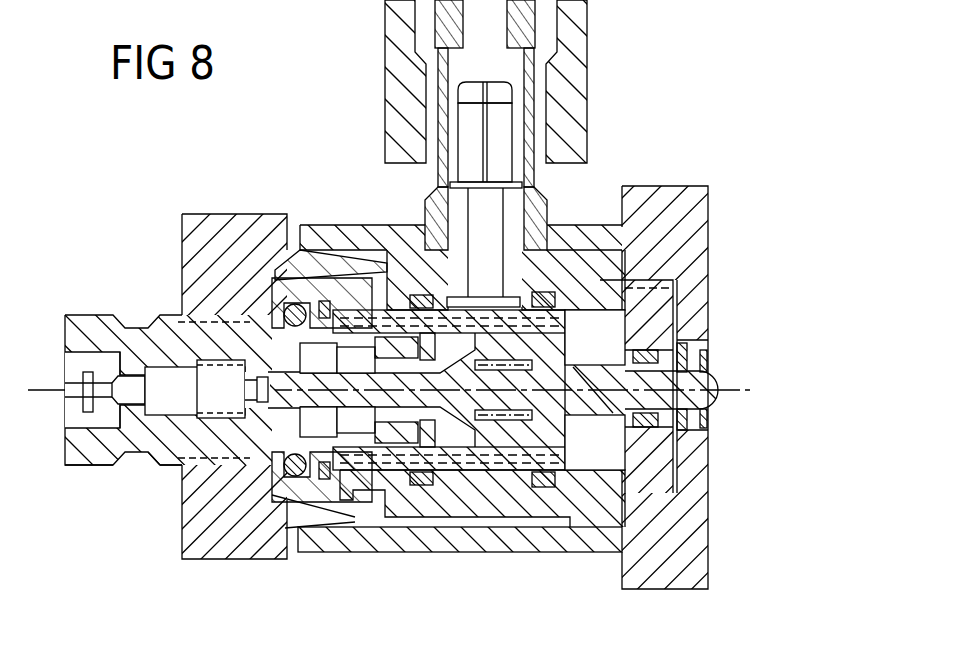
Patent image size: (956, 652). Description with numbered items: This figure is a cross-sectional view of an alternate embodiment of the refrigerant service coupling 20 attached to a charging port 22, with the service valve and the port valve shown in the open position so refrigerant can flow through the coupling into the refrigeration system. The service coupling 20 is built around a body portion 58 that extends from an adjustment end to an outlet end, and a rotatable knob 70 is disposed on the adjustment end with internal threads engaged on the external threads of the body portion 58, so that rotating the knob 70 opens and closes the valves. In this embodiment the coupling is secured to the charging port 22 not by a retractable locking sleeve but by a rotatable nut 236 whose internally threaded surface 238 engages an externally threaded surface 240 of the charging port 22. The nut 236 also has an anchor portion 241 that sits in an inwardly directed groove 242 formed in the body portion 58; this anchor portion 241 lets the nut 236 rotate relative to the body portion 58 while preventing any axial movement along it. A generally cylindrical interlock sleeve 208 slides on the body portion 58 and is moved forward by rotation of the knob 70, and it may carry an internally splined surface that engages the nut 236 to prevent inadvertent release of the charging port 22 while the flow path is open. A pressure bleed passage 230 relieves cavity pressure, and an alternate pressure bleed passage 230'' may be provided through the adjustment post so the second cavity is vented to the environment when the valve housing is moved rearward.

The service coupling 20 is at (654, 152).
The charging port 22 is at (74, 305).
The body portion 58 is at (490, 530).
The rotatable knob 70 is at (716, 296).
The interlock sleeve 208 is at (320, 218).
The pressure bleed passage 230 is at (478, 326).
The pressure bleed passage 230'' is at (706, 368).
The rotatable nut 236 is at (217, 206).
The internally threaded surface 238 is at (207, 325).
The externally threaded surface 240 is at (175, 466).
The anchor portion 241 is at (372, 278).
The inwardly directed groove 242 is at (370, 480).